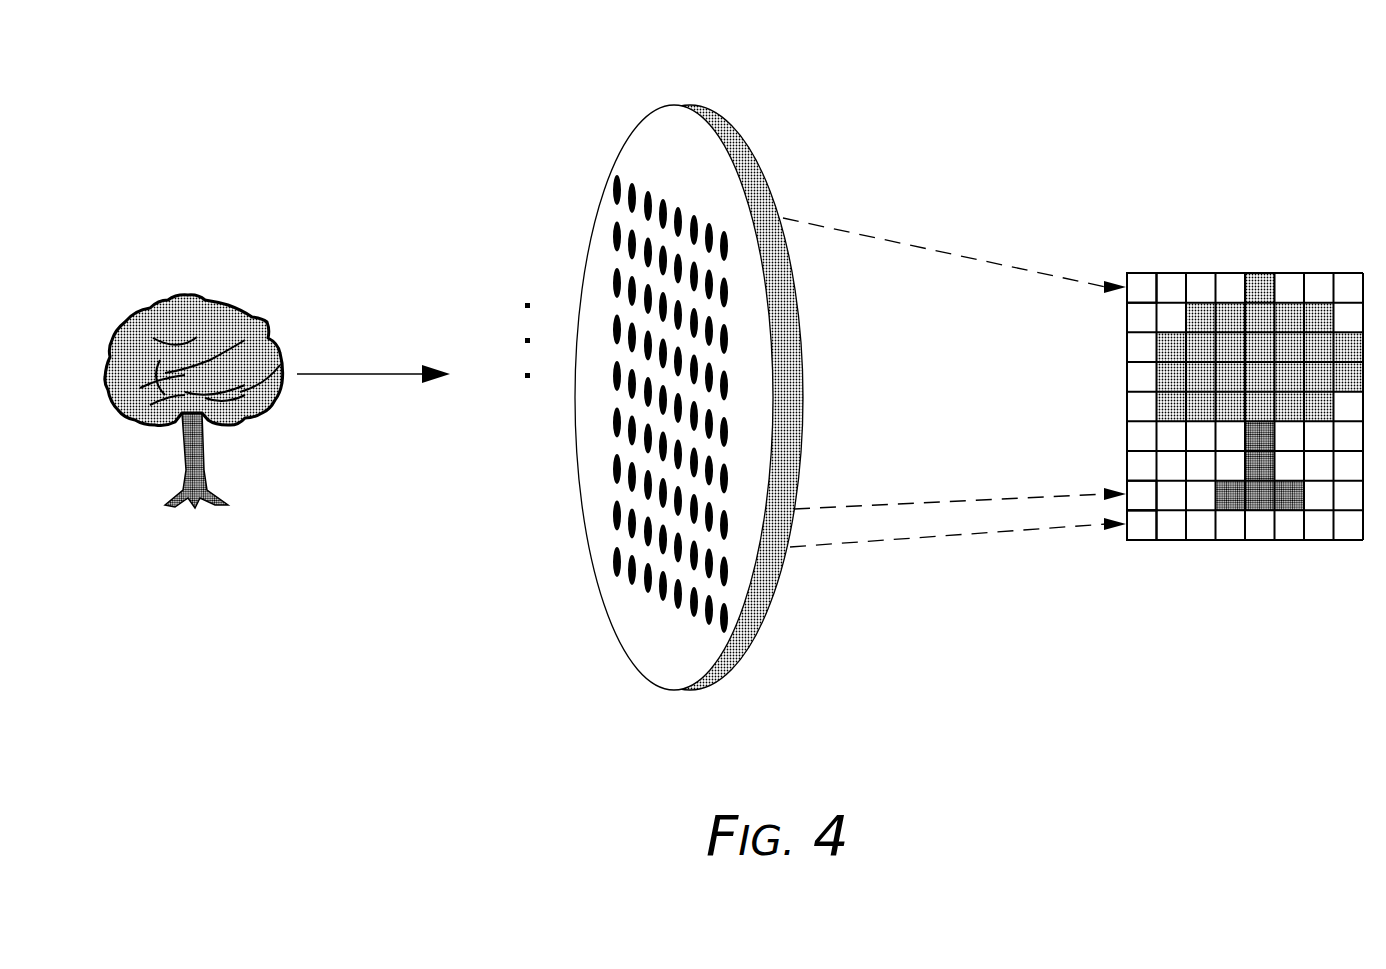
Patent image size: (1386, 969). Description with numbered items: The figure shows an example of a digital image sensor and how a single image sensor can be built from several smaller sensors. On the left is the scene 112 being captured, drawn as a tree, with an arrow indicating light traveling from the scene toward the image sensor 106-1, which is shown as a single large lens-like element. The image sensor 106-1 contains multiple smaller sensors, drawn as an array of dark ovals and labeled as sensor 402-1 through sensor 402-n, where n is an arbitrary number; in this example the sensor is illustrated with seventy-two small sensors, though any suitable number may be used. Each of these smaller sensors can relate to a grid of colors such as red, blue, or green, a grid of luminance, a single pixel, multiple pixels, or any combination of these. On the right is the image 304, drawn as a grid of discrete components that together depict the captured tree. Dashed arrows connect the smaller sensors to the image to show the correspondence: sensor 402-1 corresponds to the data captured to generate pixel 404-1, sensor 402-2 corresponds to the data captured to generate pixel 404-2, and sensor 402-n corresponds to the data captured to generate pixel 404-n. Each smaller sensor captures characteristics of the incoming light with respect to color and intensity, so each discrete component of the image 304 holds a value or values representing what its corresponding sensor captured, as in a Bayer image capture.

The scene 112 is at (205, 297).
The image sensor 106-1 is at (656, 108).
The sensor 402-n is at (614, 186).
The sensor 402-2 is at (613, 512).
The sensor 402-1 is at (613, 560).
The image 304 is at (1268, 273).
The pixel 404-n is at (1143, 282).
The pixel 404-2 is at (1138, 493).
The pixel 404-1 is at (1138, 527).